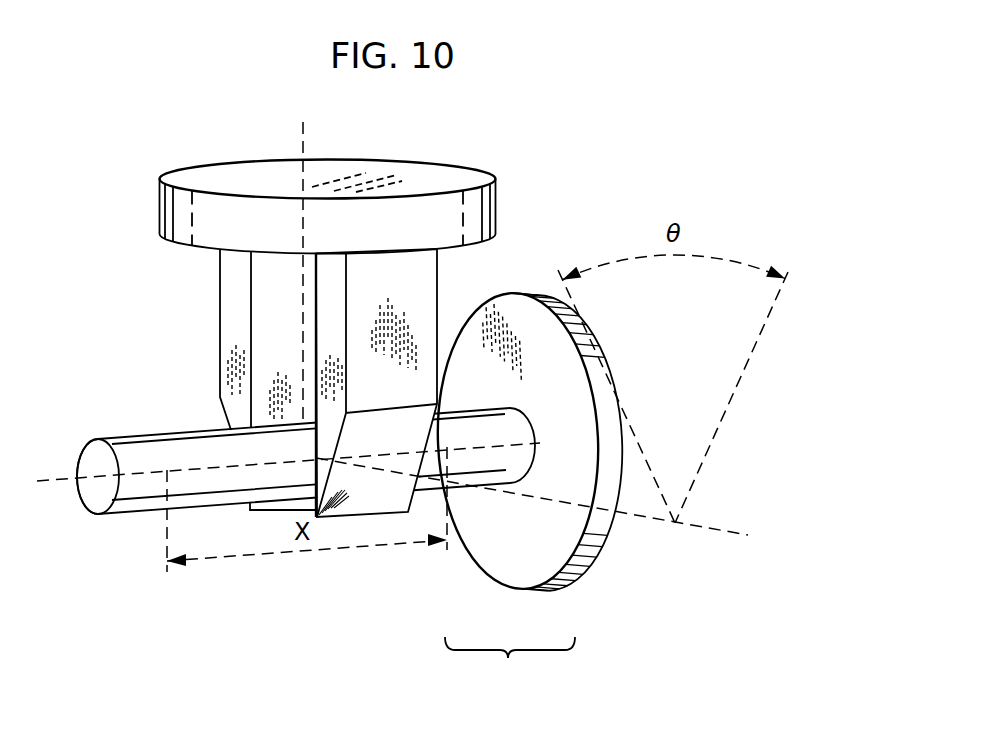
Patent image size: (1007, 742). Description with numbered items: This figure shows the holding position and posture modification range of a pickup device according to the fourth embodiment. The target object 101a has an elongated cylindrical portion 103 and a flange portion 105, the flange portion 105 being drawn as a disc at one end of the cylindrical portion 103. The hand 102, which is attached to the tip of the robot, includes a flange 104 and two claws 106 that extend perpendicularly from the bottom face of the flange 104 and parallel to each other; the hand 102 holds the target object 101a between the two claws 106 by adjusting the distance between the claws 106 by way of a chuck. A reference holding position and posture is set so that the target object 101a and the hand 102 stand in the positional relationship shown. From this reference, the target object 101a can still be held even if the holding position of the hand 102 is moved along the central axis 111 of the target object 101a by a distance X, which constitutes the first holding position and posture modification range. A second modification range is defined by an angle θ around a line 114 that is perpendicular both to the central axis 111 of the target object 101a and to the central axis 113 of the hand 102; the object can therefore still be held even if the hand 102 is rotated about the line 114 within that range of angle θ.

The target object 101a is at (510, 665).
The hand 102 is at (140, 271).
The cylindrical portion 103 is at (470, 473).
The flange 104 is at (438, 182).
The flange portion 105 is at (568, 588).
The claws 106 is at (428, 292).
The central axis of the target object 111 is at (53, 478).
The central axis of the hand 113 is at (303, 134).
The line 114 is at (638, 517).